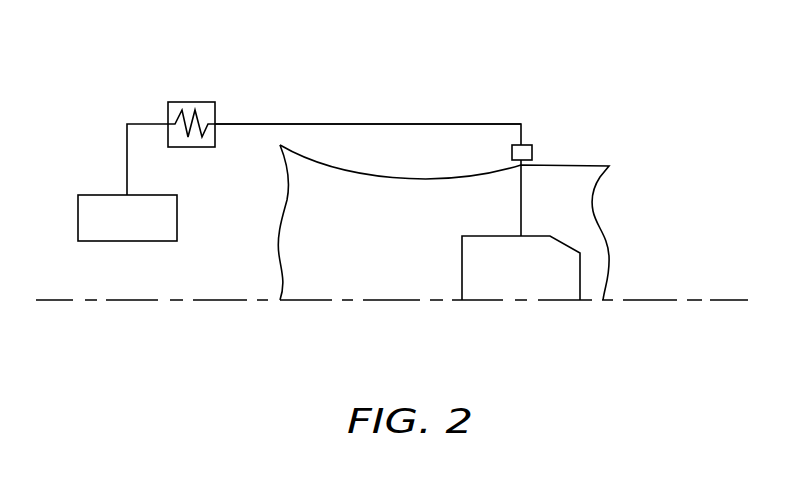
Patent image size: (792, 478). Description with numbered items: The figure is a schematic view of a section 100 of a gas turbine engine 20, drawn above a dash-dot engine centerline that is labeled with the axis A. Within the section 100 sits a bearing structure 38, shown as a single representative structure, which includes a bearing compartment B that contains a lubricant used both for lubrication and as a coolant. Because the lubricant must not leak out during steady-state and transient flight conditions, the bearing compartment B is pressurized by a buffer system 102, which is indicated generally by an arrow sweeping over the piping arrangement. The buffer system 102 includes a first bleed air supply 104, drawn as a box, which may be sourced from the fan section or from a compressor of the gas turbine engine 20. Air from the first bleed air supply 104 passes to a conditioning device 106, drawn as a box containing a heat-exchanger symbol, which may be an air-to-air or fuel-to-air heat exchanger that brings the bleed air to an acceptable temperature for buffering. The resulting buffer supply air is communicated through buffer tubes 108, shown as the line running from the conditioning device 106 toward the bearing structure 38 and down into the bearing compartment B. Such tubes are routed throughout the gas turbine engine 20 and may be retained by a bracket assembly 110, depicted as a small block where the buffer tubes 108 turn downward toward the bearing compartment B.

The gas turbine engine 20 is at (645, 112).
The bearing structure 38 is at (586, 239).
The section 100 is at (600, 177).
The buffer system 102 is at (316, 72).
The first bleed air supply 104 is at (103, 207).
The conditioning device 106 is at (189, 101).
The buffer tubes 108 is at (418, 123).
The bracket assembly 110 is at (529, 145).
The axis A is at (737, 300).
The bearing compartment B is at (572, 283).